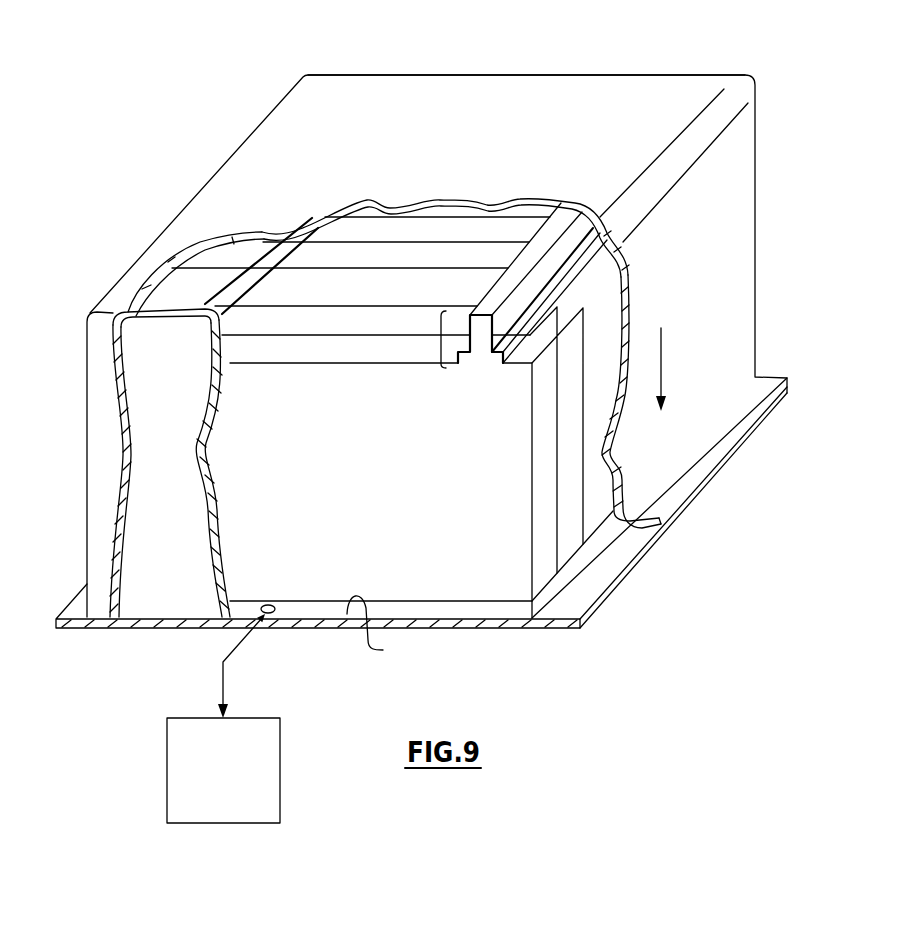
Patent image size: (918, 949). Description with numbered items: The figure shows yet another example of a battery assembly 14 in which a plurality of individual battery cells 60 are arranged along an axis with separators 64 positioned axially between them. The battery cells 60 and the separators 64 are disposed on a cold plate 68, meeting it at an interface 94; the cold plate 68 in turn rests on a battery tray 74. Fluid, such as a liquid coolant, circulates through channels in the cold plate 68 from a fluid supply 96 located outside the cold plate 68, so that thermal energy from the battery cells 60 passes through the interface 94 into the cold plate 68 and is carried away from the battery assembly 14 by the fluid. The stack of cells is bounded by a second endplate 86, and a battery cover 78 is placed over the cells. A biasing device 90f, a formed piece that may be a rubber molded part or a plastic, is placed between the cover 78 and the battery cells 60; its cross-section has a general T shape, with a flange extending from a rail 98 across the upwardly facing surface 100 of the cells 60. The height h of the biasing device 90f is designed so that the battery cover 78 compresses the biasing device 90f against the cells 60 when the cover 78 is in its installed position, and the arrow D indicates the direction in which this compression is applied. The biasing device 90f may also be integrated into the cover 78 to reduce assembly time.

The battery assembly 14 is at (765, 90).
The battery cover 78 is at (317, 92).
The battery cells 60 is at (437, 227).
The separators 64 is at (490, 240).
The upwardly facing surface 100 is at (500, 260).
The biasing device 90f is at (550, 265).
The rail 98 is at (543, 388).
The height of the biasing device h is at (441, 343).
The direction of fluid flow D is at (662, 354).
The second endplate 86 is at (167, 600).
The interface 94 is at (380, 629).
The cold plate 68 is at (440, 612).
The battery tray 74 is at (510, 629).
The fluid supply 96 is at (211, 809).